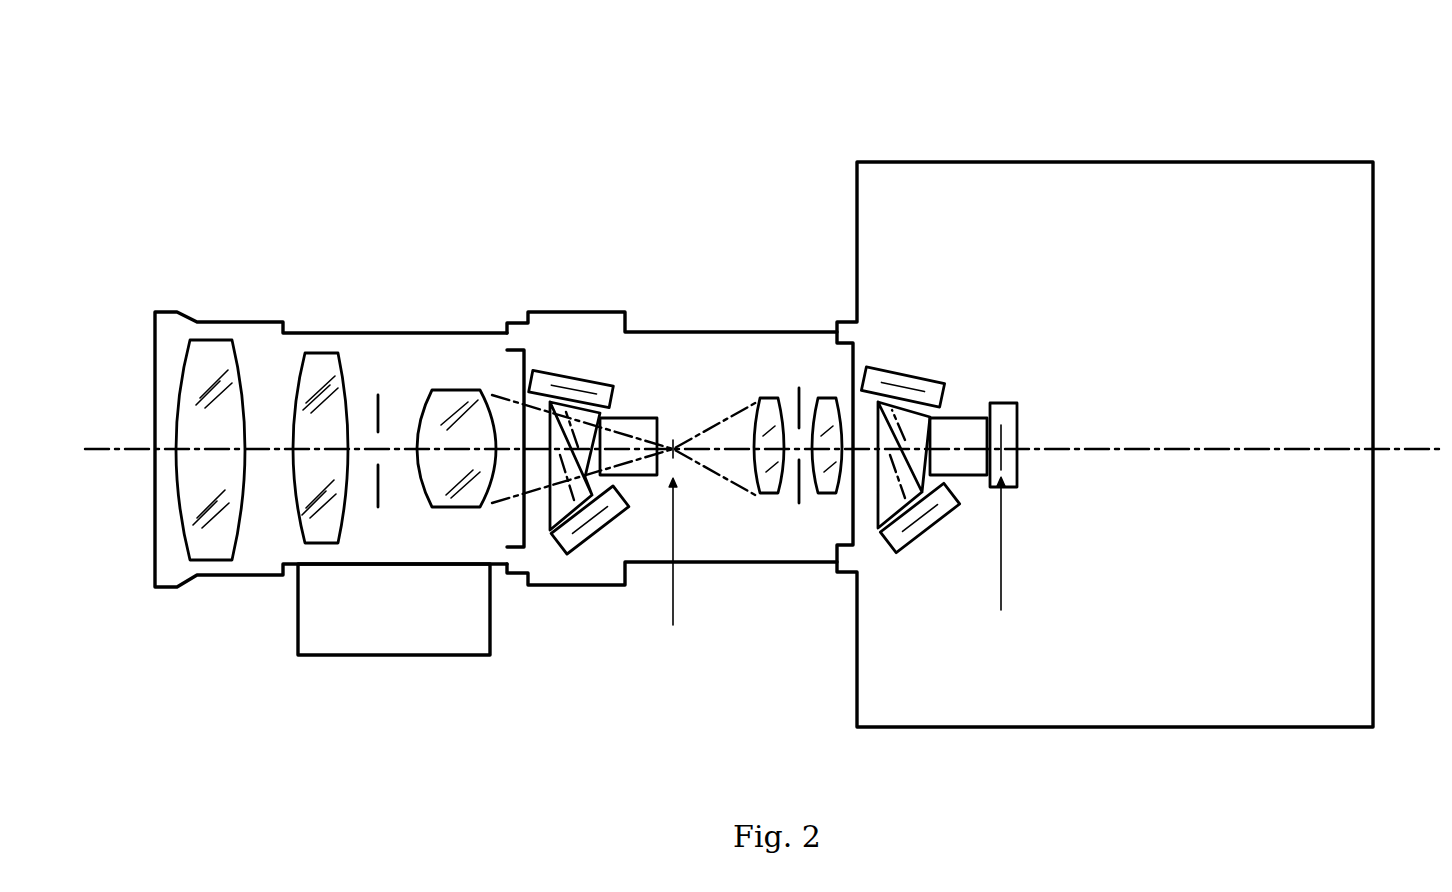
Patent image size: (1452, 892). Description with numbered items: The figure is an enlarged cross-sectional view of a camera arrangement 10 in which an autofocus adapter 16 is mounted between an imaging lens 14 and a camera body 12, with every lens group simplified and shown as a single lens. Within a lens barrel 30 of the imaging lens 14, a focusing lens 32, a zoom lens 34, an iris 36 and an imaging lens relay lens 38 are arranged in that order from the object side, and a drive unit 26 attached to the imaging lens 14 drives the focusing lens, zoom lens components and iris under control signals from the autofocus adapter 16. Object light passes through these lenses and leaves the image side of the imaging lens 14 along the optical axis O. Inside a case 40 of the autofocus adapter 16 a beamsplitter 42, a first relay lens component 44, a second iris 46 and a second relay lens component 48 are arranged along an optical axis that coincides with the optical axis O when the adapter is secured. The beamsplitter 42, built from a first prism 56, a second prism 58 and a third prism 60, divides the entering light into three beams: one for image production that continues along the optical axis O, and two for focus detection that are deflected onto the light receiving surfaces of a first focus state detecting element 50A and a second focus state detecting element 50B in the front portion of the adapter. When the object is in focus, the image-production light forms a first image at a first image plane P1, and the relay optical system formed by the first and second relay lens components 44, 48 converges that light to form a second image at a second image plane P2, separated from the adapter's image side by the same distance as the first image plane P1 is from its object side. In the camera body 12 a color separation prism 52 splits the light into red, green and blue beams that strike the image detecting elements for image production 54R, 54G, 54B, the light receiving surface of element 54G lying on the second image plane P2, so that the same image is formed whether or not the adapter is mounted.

The camera system 10 is at (1073, 92).
The camera body 12 is at (1241, 150).
The imaging lens 14 is at (366, 257).
The autofocus adapter 16 is at (720, 283).
The drive unit 26 is at (300, 626).
The lens barrel 30 is at (157, 312).
The focusing lens 32 is at (216, 340).
The zoom lens 34 is at (316, 353).
The iris 36 is at (380, 393).
The imaging lens relay lens 38 is at (452, 390).
The case 40 is at (536, 312).
The beamsplitter 42 is at (627, 407).
The first relay lens component 44 is at (768, 398).
The second iris 46 is at (798, 388).
The second relay lens component 48 is at (824, 398).
The first focus state detecting element 50A is at (607, 512).
The second focus state detecting element 50B is at (588, 376).
The color separation prism 52 is at (953, 413).
The image detecting element for image production 54R is at (902, 378).
The image detecting element for image production 54G is at (1018, 483).
The image detecting element for image production 54B is at (920, 548).
The first prism 56 is at (545, 516).
The second prism 58 is at (580, 382).
The third prism 60 is at (672, 441).
The optical axis O is at (155, 447).
The first image plane P1 is at (675, 568).
The second image plane P2 is at (1003, 564).